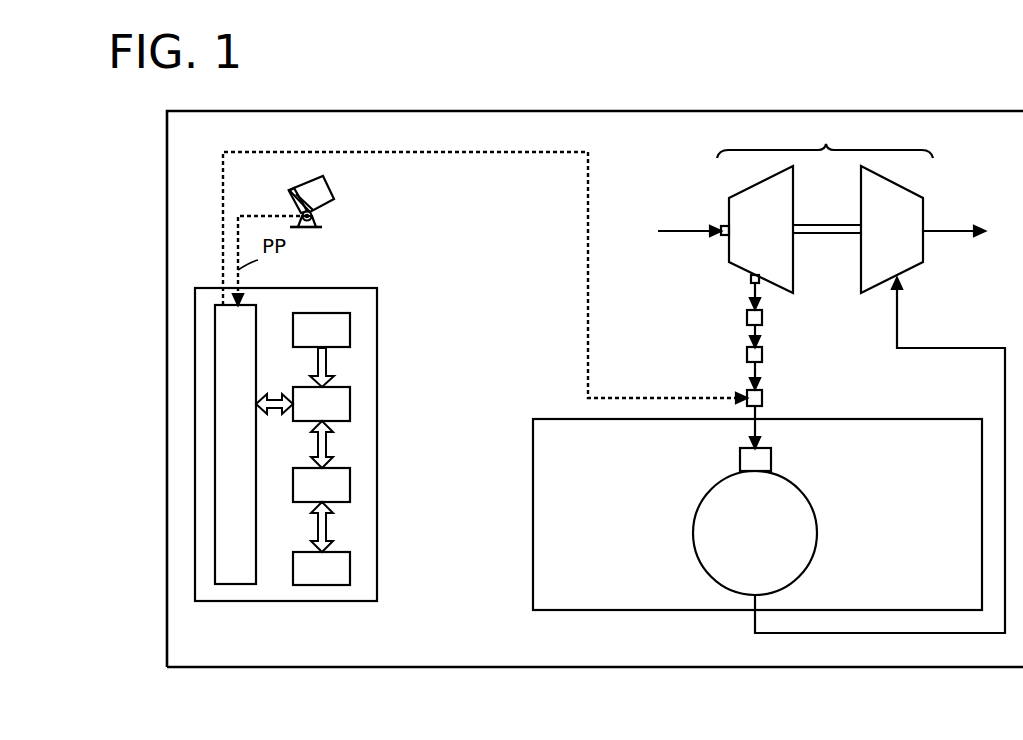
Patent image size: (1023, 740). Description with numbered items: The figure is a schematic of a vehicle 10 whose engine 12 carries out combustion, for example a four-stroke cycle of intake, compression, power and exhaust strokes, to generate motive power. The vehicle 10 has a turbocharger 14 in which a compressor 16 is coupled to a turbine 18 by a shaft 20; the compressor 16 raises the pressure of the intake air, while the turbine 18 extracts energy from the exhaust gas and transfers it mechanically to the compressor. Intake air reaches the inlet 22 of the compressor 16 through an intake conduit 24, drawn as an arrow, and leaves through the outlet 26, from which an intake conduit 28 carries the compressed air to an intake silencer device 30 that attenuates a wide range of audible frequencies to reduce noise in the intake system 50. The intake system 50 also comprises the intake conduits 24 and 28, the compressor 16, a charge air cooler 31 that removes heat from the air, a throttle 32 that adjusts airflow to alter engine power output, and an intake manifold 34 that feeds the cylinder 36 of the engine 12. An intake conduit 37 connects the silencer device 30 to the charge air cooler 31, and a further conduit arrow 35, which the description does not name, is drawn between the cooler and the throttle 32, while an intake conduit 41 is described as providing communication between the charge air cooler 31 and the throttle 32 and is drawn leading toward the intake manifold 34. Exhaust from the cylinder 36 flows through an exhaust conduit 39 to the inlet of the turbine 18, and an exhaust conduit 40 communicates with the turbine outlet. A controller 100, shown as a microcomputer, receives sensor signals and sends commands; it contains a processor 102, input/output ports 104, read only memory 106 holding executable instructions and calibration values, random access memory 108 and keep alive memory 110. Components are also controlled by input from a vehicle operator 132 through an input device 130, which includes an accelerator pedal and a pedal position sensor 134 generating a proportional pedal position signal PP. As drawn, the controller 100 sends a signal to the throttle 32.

The vehicle 10 is at (170, 111).
The engine 12 is at (538, 419).
The turbocharger 14 is at (825, 139).
The compressor 16 is at (769, 180).
The turbine 18 is at (886, 180).
The shaft 20 is at (846, 225).
The inlet 22 is at (725, 226).
The intake conduit 24 is at (684, 230).
The outlet 26 is at (750, 279).
The intake conduit 28 is at (751, 297).
The intake silencer device 30 is at (746, 318).
The charge air cooler 31 is at (762, 354).
The throttle 32 is at (762, 398).
The intake manifold 34 is at (739, 460).
The intake passage 35 is at (750, 369).
The cylinder 36 is at (787, 487).
The intake conduit 37 is at (762, 325).
The exhaust conduit 39 is at (753, 623).
The exhaust conduit 40 is at (943, 230).
The intake conduit 41 is at (752, 428).
The intake system 50 is at (618, 204).
The controller 100 is at (377, 290).
The processor 102 is at (350, 405).
The input/output ports 104 is at (257, 313).
The read only memory 106 is at (350, 328).
The random access memory 108 is at (350, 488).
The keep alive memory 110 is at (350, 572).
The input device 130 is at (302, 210).
The vehicle operator 132 is at (328, 190).
The pedal position sensor 134 is at (322, 221).